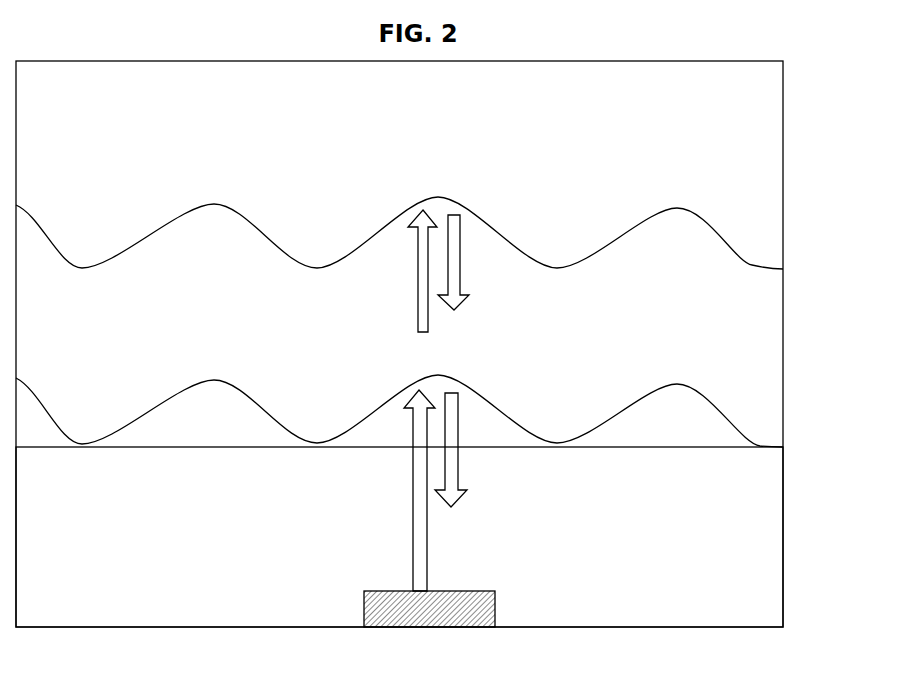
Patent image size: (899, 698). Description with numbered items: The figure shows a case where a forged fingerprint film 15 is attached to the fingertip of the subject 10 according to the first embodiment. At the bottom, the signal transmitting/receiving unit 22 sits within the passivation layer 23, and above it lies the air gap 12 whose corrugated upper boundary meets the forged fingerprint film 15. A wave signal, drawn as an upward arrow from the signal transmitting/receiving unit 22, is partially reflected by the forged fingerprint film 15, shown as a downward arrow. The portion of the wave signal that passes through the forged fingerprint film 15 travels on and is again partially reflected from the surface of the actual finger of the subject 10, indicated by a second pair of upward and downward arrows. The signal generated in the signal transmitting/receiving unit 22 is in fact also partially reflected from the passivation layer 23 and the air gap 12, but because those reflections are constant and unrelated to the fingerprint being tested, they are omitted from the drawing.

The subject 10 is at (775, 167).
The forged fingerprint film 15 is at (775, 353).
The air gap 12 is at (500, 430).
The passivation layer 23 is at (775, 512).
The signal transmitting/receiving unit 22 is at (497, 590).